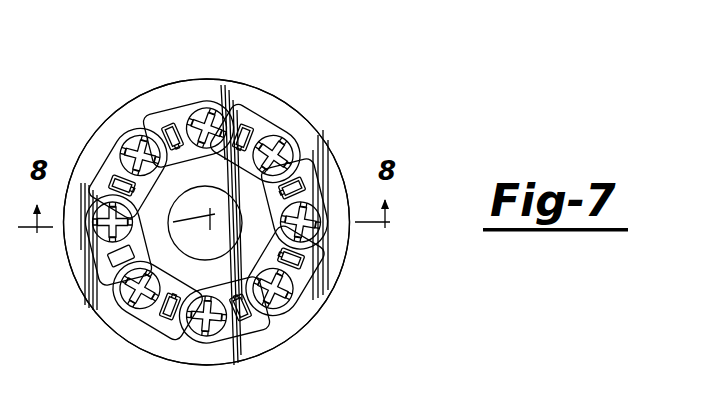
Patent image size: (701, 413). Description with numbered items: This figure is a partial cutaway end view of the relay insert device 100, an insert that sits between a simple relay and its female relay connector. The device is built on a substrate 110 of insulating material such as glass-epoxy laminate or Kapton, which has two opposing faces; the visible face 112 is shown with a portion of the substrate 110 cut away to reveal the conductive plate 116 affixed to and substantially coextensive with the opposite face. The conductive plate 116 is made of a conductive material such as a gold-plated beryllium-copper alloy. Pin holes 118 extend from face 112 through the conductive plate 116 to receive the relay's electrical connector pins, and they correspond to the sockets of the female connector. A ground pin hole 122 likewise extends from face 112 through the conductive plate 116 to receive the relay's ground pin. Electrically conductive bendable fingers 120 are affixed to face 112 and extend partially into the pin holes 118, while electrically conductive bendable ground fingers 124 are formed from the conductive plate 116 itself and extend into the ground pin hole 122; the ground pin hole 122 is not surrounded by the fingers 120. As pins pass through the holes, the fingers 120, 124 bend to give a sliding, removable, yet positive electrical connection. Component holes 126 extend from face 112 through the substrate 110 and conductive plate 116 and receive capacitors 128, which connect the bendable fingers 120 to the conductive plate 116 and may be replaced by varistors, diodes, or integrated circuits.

The relay insert device 100 is at (166, 62).
The substrate 110 is at (255, 128).
The face 112 is at (303, 310).
The conductive plate 116 is at (100, 280).
The pin holes 118 is at (210, 220).
The electrically conductive bendable fingers 120 is at (226, 120).
The ground pin hole 122 is at (98, 220).
The electrically conductive bendable ground fingers 124 is at (115, 255).
The component holes 126 is at (250, 133).
The capacitors 128 is at (300, 185).